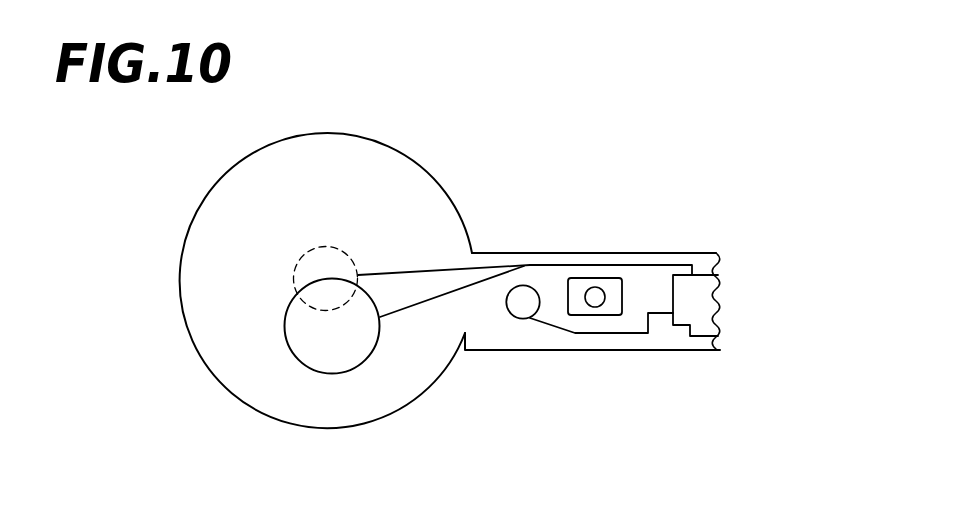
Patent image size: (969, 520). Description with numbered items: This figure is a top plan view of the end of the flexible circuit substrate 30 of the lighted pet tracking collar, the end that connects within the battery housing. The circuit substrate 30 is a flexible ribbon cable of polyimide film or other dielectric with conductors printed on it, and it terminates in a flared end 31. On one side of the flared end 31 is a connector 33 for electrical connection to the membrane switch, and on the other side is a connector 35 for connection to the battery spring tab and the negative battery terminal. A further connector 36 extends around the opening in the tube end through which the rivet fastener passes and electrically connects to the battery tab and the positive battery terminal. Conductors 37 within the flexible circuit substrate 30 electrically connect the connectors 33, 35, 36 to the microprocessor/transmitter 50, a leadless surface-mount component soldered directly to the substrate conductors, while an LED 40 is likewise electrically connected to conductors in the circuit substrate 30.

The circuit substrate 30 is at (555, 253).
The flared end 31 is at (221, 180).
The connector 33 is at (330, 258).
The connector 35 is at (330, 355).
The connector 36 is at (523, 308).
The conductors 37 is at (420, 272).
The LED 40 is at (610, 283).
The microprocessor 50 is at (707, 293).